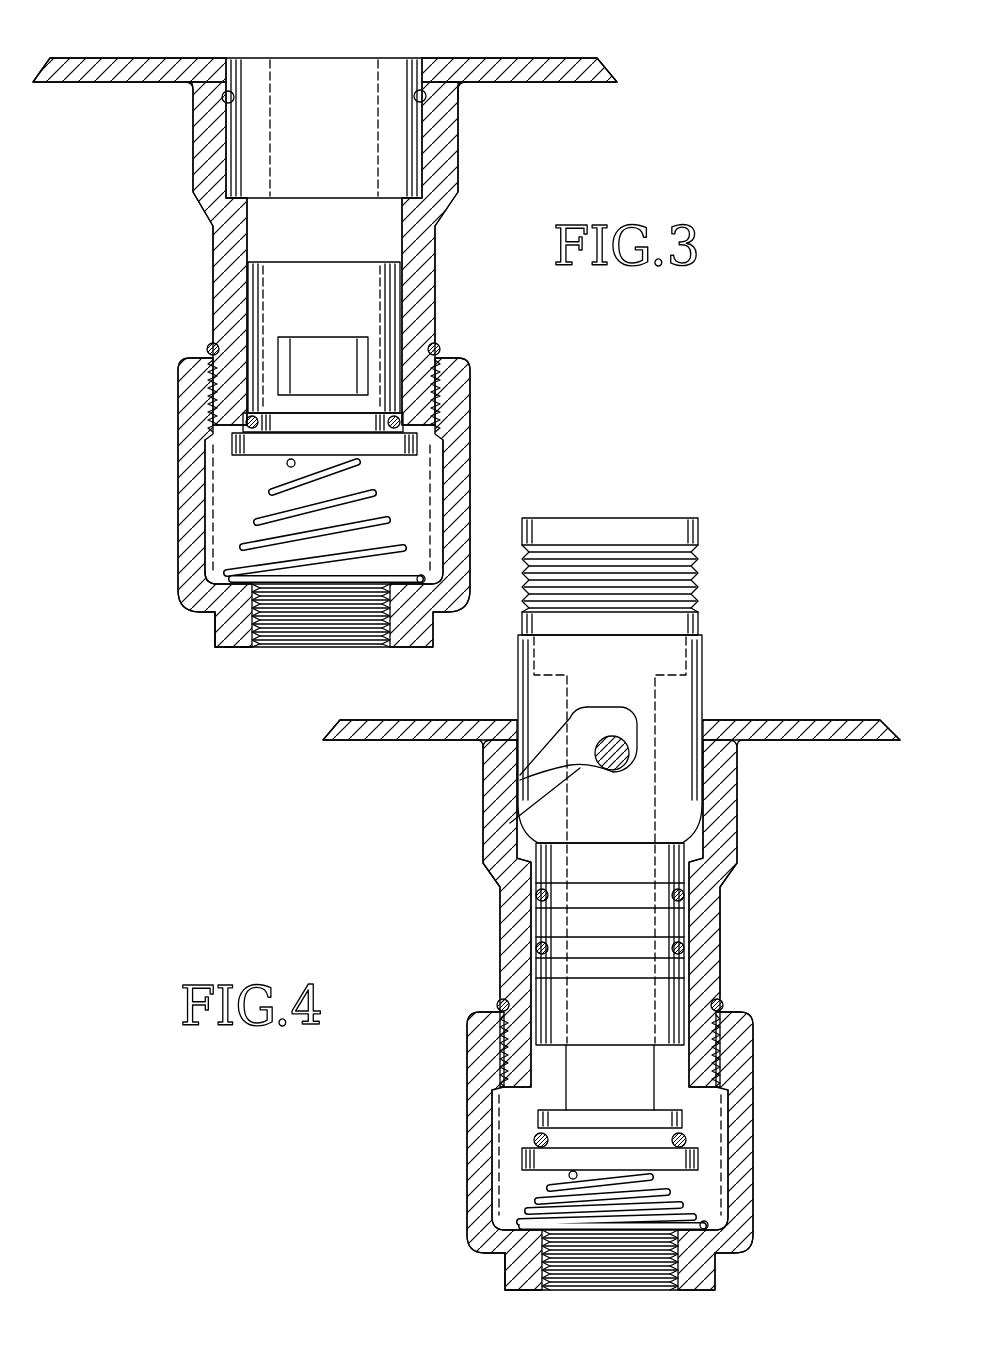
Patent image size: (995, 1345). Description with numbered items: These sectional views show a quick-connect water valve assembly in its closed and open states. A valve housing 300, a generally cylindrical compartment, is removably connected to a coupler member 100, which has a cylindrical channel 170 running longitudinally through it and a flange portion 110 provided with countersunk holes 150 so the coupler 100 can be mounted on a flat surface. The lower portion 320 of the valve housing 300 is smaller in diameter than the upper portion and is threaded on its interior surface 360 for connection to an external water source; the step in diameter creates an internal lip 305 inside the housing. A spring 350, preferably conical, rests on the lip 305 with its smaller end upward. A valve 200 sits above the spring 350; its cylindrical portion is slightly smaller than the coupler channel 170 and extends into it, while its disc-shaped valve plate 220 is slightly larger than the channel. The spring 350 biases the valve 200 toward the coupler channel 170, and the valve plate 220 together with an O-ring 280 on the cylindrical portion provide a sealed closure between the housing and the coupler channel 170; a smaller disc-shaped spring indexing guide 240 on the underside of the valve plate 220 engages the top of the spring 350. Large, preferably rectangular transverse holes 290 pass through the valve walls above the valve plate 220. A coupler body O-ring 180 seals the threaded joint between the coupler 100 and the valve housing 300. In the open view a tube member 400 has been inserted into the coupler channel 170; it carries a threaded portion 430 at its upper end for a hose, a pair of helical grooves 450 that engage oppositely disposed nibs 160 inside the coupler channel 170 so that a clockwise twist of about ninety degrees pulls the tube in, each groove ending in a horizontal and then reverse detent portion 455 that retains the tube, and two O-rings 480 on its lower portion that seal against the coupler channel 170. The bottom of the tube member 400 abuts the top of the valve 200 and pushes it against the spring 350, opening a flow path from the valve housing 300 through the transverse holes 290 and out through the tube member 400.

In FIG. 3, the coupler member 100 is at (200, 196).
In FIG. 4, the coupler member 100 is at (760, 718).
In FIG. 3, the flange portion 110 is at (485, 72).
In FIG. 3, the countersunk holes 150 is at (115, 56).
In FIG. 4, the countersunk holes 150 is at (825, 722).
In FIG. 3, the nibs 160 is at (233, 100).
In FIG. 4, the nibs 160 is at (615, 762).
In FIG. 3, the cylindrical channel 170 is at (327, 74).
In FIG. 3, the coupler body O-ring 180 is at (438, 352).
In FIG. 4, the coupler body O-ring 180 is at (497, 1004).
In FIG. 3, the valve 200 is at (270, 262).
In FIG. 4, the valve 200 is at (645, 1002).
In FIG. 3, the valve plate 220 is at (262, 445).
In FIG. 4, the valve plate 220 is at (702, 1160).
In FIG. 3, the spring indexing guide 240 is at (295, 466).
In FIG. 4, the spring indexing guide 240 is at (570, 1177).
In FIG. 3, the O-ring 280 is at (250, 420).
In FIG. 4, the O-ring 280 is at (688, 1138).
In FIG. 3, the transverse holes 290 is at (335, 367).
In FIG. 4, the transverse holes 290 is at (656, 1062).
In FIG. 3, the valve housing 300 is at (472, 460).
In FIG. 4, the valve housing 300 is at (610, 1151).
In FIG. 3, the internal lip 305 is at (228, 574).
In FIG. 3, the lower portion 320 is at (212, 635).
In FIG. 4, the lower portion 320 is at (506, 1272).
In FIG. 3, the spring 350 is at (255, 545).
In FIG. 4, the spring 350 is at (700, 1210).
In FIG. 3, the threaded interior surface 360 is at (275, 650).
In FIG. 4, the threaded interior surface 360 is at (610, 1260).
In FIG. 4, the tube member 400 is at (705, 660).
In FIG. 4, the threaded portion 430 is at (700, 556).
In FIG. 4, the helical grooves 450 is at (545, 792).
In FIG. 4, the detent portion 455 is at (520, 783).
In FIG. 4, the O-ring 480 is at (536, 895).